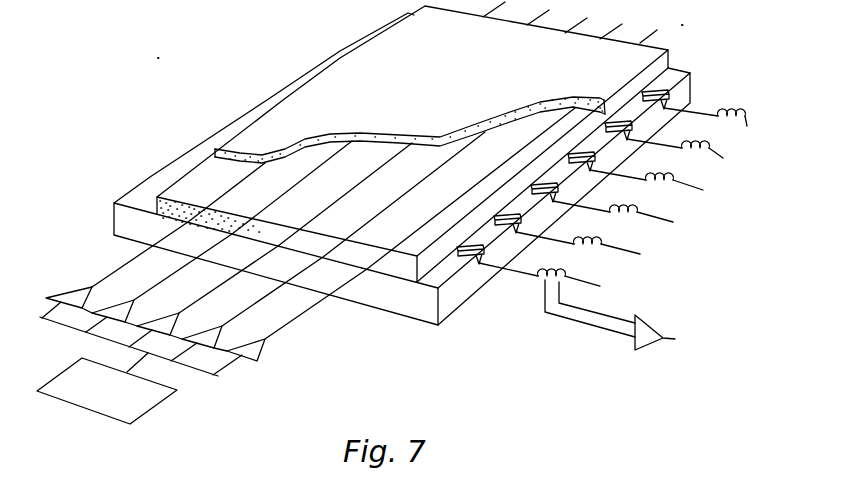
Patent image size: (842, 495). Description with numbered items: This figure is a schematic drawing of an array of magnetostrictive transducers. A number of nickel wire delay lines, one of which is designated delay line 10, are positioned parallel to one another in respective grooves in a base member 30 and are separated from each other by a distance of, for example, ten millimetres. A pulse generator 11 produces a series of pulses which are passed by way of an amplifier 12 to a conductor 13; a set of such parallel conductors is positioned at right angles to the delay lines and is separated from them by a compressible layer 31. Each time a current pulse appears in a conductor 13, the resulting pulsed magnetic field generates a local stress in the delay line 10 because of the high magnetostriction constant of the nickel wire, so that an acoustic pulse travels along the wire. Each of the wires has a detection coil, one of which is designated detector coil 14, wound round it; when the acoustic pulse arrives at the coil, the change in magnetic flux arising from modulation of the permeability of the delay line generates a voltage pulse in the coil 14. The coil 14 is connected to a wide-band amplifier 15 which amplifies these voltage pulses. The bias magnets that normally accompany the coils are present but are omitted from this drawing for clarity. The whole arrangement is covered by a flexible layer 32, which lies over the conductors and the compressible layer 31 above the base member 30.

The magnetostrictive delay line 10 is at (527, 270).
The pulse generator 11 is at (163, 405).
The amplifier 12 is at (210, 336).
The conductor 13 is at (257, 303).
The detector coil 14 is at (567, 271).
The wide-band amplifier 15 is at (645, 322).
The base member 30 is at (443, 307).
The compressible layer 31 is at (443, 258).
The flexible layer 32 is at (282, 123).